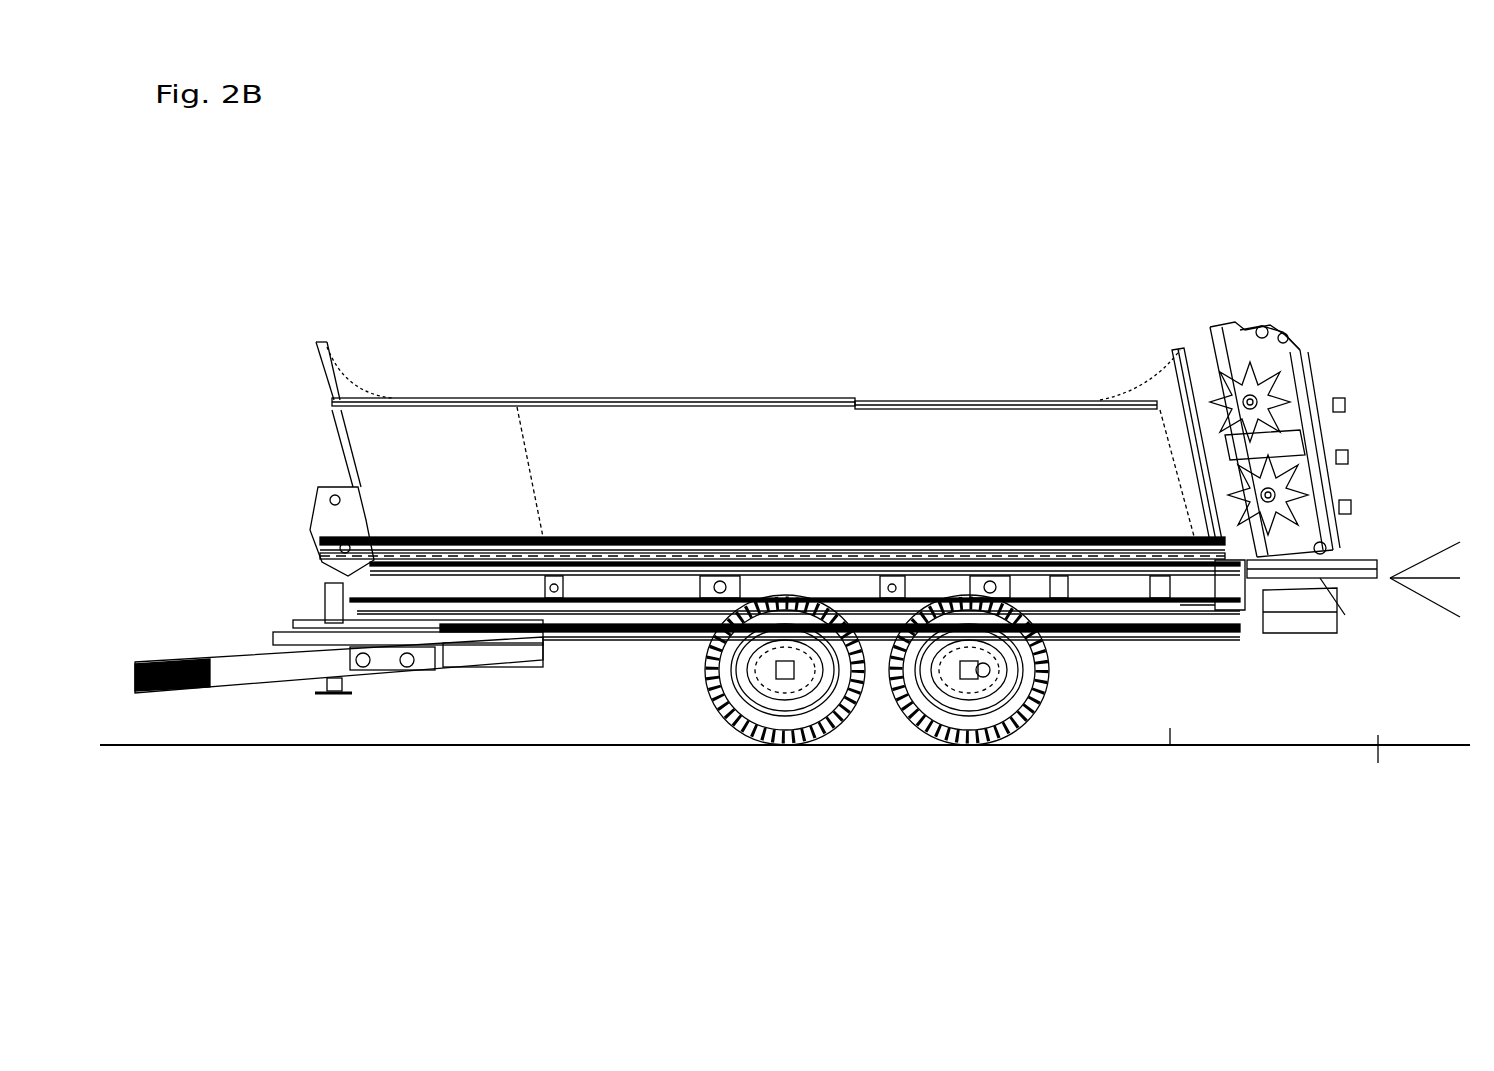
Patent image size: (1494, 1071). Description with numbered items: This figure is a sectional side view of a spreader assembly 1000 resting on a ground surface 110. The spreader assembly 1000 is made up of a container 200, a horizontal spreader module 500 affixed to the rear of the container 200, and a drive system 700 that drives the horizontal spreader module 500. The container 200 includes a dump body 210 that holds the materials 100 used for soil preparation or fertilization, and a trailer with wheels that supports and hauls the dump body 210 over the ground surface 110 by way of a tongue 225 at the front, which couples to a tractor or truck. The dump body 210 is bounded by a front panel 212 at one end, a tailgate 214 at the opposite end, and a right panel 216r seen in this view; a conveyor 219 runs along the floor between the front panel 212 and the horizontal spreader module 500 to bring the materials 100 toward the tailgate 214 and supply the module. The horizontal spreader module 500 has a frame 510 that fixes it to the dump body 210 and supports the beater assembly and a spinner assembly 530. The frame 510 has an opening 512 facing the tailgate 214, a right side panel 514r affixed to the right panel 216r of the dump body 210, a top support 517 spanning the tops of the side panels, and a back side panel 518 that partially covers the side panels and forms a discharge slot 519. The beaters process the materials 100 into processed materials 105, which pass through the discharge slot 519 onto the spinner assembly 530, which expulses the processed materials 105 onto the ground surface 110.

The materials 100 is at (362, 470).
The processed materials 105 is at (1427, 600).
The ground surface 110 is at (1395, 748).
The container 200 is at (1170, 730).
The dump body 210 is at (752, 247).
The front panel 212 is at (318, 433).
The tailgate 214 is at (1180, 413).
The right panel 216r is at (678, 463).
The conveyor 219 is at (700, 545).
The tongue 225 is at (245, 717).
The horizontal spreader module 500 is at (1378, 740).
The frame 510 is at (1226, 270).
The opening 512 is at (1205, 433).
The right side panel 514r is at (1237, 360).
The top support 517 is at (1273, 338).
The back side panel 518 is at (1320, 470).
The discharge slot 519 is at (1330, 557).
The spinner assembly 530 is at (1310, 659).
The drive system 700 is at (1200, 610).
The spreader assembly 1000 is at (1415, 838).